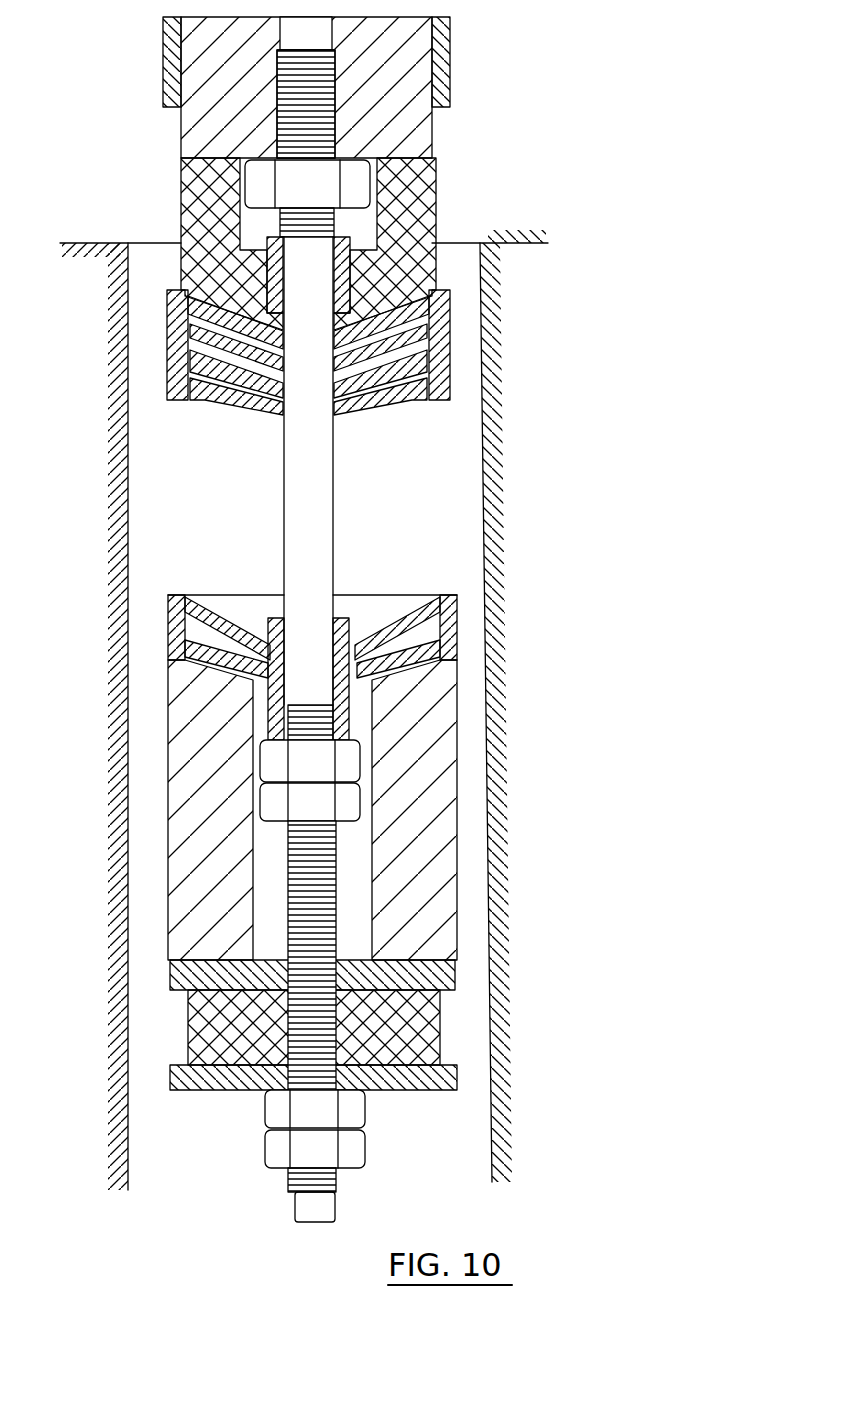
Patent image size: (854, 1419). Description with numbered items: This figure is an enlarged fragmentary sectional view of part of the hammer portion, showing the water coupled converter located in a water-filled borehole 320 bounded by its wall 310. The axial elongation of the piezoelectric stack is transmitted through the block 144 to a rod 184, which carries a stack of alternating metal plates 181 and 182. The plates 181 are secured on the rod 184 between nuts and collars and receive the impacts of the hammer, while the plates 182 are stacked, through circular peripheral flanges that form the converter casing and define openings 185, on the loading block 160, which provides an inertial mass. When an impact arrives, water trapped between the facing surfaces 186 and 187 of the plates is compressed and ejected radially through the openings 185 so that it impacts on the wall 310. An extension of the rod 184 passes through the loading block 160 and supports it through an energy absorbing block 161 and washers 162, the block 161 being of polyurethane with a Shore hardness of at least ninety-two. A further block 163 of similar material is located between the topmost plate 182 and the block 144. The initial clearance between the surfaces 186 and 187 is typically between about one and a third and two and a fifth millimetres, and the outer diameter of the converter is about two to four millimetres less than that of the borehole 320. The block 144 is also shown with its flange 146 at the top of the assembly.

The block 144 is at (412, 128).
The flange of upper block 146 is at (455, 57).
The loading block 160 is at (440, 830).
The energy absorbing block 161 is at (430, 1030).
The washers 162 is at (445, 975).
The further block 163 is at (415, 268).
The plates 181 is at (432, 385).
The plates 182 is at (432, 305).
The rod 184 is at (328, 488).
The openings 185 is at (185, 333).
The facing surface 186 is at (190, 345).
The facing surface 187 is at (230, 372).
The wall 310 is at (492, 556).
The borehole 320 is at (450, 498).